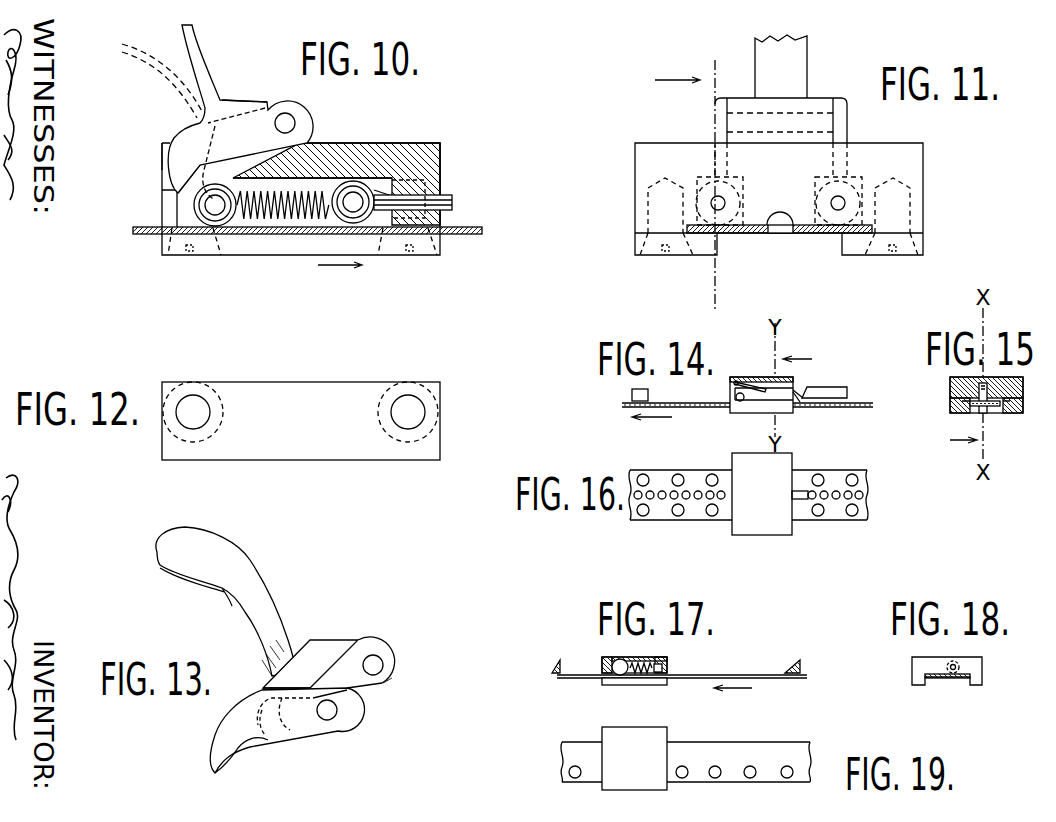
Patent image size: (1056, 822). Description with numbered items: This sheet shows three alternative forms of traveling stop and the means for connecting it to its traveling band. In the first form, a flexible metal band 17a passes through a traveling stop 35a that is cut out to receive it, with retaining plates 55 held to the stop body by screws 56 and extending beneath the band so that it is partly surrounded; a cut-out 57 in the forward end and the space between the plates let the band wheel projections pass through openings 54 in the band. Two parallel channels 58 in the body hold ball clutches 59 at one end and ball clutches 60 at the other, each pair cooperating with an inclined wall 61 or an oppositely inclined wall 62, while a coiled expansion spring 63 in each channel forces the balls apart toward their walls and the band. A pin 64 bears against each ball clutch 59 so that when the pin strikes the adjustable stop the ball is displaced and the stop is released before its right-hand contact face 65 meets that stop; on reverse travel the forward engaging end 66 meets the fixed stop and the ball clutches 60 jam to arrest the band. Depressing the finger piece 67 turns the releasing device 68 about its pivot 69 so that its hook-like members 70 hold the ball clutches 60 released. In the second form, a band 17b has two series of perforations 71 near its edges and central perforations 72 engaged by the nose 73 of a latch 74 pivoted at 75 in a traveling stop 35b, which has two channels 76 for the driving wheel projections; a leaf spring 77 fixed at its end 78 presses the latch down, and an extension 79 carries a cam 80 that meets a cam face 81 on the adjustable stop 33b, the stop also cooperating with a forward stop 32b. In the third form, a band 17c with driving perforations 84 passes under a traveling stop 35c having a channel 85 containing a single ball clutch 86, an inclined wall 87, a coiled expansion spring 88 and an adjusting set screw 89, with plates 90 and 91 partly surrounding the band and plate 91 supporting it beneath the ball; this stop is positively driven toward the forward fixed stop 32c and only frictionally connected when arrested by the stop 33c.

In FIG. 10, the flexible metal band 17a is at (461, 234).
In FIG. 14, the band 17b is at (747, 405).
In FIG. 15, the band 17b is at (985, 403).
In FIG. 16, the band 17b is at (849, 465).
In FIG. 17, the traveling band 17c is at (790, 679).
In FIG. 18, the traveling band 17c is at (946, 678).
In FIG. 19, the traveling band 17c is at (715, 750).
In FIG. 14, the forward stop 32b is at (632, 395).
In FIG. 17, the forward fixed stop 32c is at (556, 670).
In FIG. 14, the adjustable stop 33b is at (845, 390).
In FIG. 17, the stop 33c is at (790, 668).
In FIG. 10, the traveling stop 35a is at (364, 152).
In FIG. 11, the traveling stop 35a is at (779, 187).
In FIG. 15, the traveling stop 35b is at (1055, 346).
In FIG. 17, the traveling stop 35c is at (655, 660).
In FIG. 18, the traveling stop 35c is at (982, 672).
In FIG. 19, the traveling stop 35c is at (638, 738).
In FIG. 11, the openings 54 is at (771, 233).
In FIG. 10, the retaining plates 55 is at (292, 248).
In FIG. 11, the retaining plates 55 is at (635, 247).
In FIG. 12, the retaining plates 55 is at (301, 421).
In FIG. 10, the screws 56 is at (190, 250).
In FIG. 11, the screws 56 is at (650, 255).
In FIG. 10, the cut-out 57 is at (162, 214).
In FIG. 11, the cut-out 57 is at (783, 221).
In FIG. 10, the pockets or channels 58 is at (312, 182).
In FIG. 11, the pockets or channels 58 is at (697, 186).
In FIG. 10, the ball clutches 59 is at (360, 190).
In FIG. 10, the ball clutches 60 is at (217, 192).
In FIG. 10, the inclined wall 61 is at (378, 194).
In FIG. 10, the inclined wall 62 is at (180, 194).
In FIG. 10, the coiled expansion spring 63 is at (277, 218).
In FIG. 10, the pin 64 is at (452, 203).
In FIG. 11, the pin 64 is at (838, 210).
In FIG. 10, the right-hand contact face 65 is at (440, 178).
In FIG. 10, the forward engaging end 66 is at (162, 157).
In FIG. 10, the finger piece 67 is at (200, 50).
In FIG. 11, the finger piece 67 is at (781, 106).
In FIG. 13, the finger piece 67 is at (226, 601).
In FIG. 10, the releasing device 68 is at (244, 86).
In FIG. 13, the releasing device 68 is at (310, 642).
In FIG. 10, the pivot 69 is at (288, 114).
In FIG. 11, the pivot 69 is at (715, 125).
In FIG. 13, the pivot 69 is at (371, 662).
In FIG. 11, the hook-like members 70 is at (715, 188).
In FIG. 13, the hook-like members 70 is at (245, 750).
In FIG. 16, the perforations 71 is at (710, 474).
In FIG. 16, the perforations 72 is at (860, 494).
In FIG. 14, the engaging nose 73 is at (786, 398).
In FIG. 14, the latch 74 is at (762, 398).
In FIG. 15, the latch 74 is at (985, 412).
In FIG. 16, the latch 74 is at (762, 494).
In FIG. 14, the pivot 75 is at (736, 400).
In FIG. 15, the pivot 75 is at (950, 395).
In FIG. 15, the channels 76 is at (968, 410).
In FIG. 14, the leaf spring 77 is at (752, 388).
In FIG. 14, the end 78 is at (744, 388).
In FIG. 14, the extension 79 is at (793, 396).
In FIG. 14, the cam 80 is at (800, 400).
In FIG. 14, the cam face 81 is at (800, 398).
In FIG. 19, the driving perforations 84 is at (569, 774).
In FIG. 17, the channel or chamber 85 is at (652, 663).
In FIG. 17, the ball clutch 86 is at (620, 674).
In FIG. 17, the inclined wall 87 is at (603, 660).
In FIG. 17, the coiled expansion spring 88 is at (640, 662).
In FIG. 17, the set screw 89 is at (663, 668).
In FIG. 18, the set screw 89 is at (957, 664).
In FIG. 17, the plate 90 is at (605, 682).
In FIG. 18, the plate 90 is at (918, 685).
In FIG. 18, the plate 91 is at (968, 685).